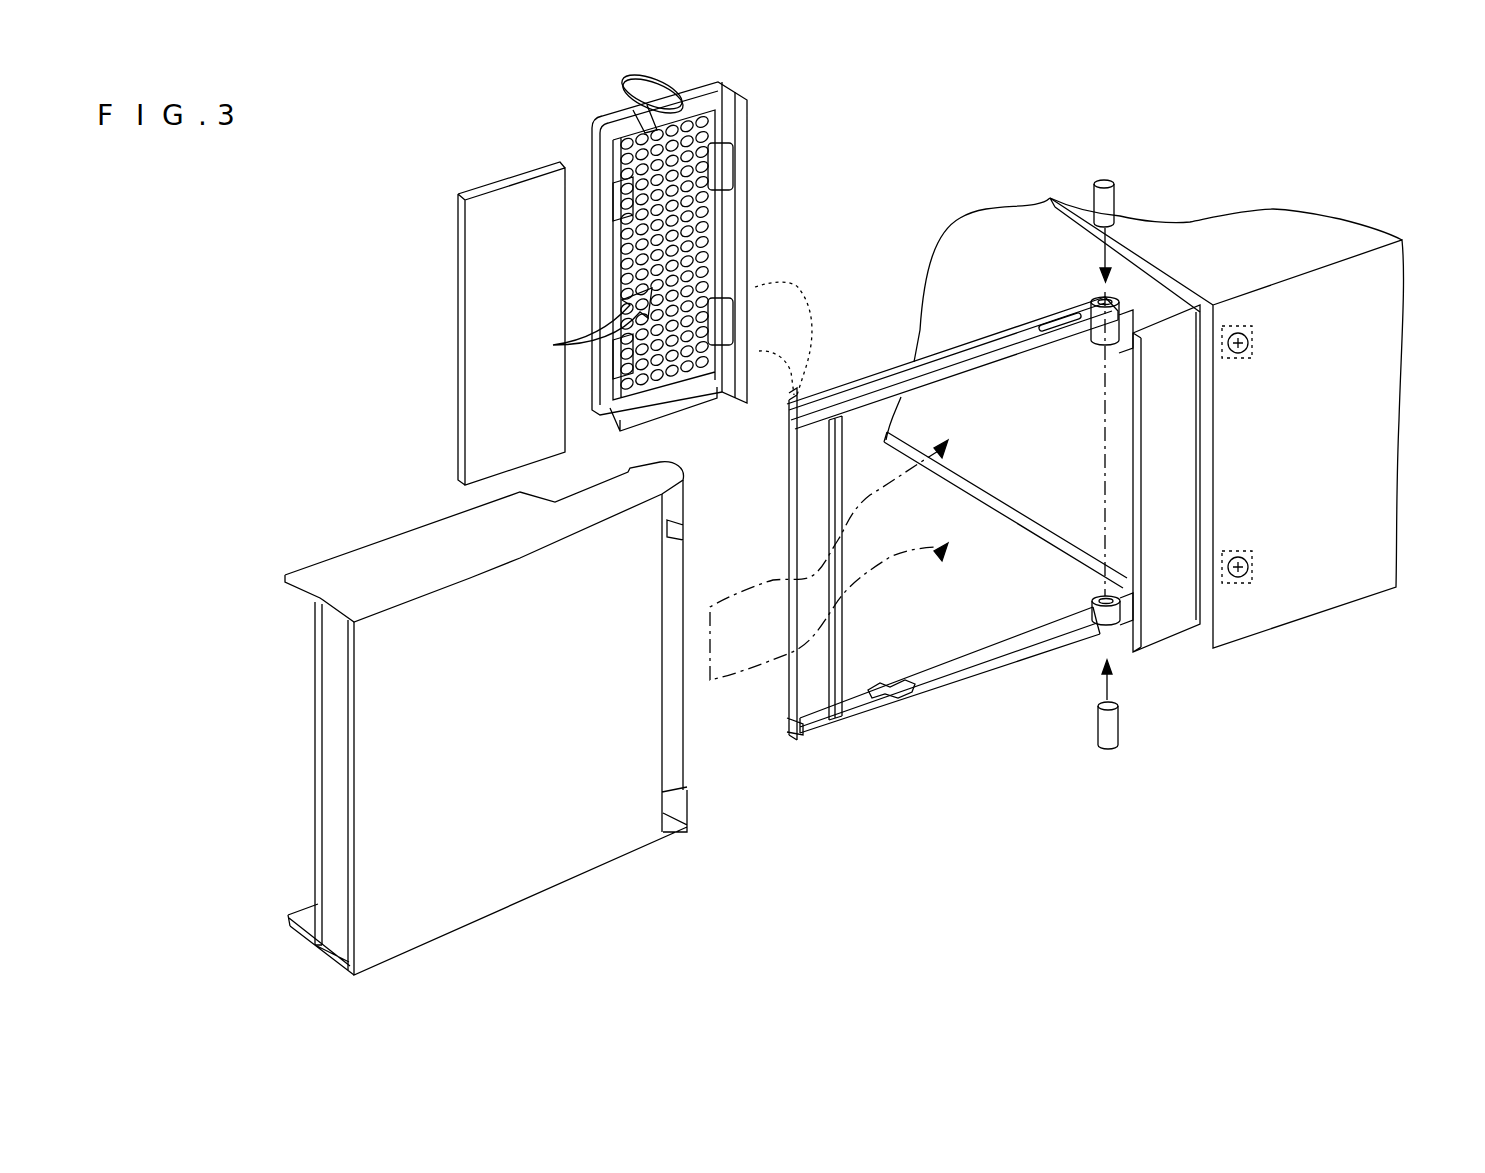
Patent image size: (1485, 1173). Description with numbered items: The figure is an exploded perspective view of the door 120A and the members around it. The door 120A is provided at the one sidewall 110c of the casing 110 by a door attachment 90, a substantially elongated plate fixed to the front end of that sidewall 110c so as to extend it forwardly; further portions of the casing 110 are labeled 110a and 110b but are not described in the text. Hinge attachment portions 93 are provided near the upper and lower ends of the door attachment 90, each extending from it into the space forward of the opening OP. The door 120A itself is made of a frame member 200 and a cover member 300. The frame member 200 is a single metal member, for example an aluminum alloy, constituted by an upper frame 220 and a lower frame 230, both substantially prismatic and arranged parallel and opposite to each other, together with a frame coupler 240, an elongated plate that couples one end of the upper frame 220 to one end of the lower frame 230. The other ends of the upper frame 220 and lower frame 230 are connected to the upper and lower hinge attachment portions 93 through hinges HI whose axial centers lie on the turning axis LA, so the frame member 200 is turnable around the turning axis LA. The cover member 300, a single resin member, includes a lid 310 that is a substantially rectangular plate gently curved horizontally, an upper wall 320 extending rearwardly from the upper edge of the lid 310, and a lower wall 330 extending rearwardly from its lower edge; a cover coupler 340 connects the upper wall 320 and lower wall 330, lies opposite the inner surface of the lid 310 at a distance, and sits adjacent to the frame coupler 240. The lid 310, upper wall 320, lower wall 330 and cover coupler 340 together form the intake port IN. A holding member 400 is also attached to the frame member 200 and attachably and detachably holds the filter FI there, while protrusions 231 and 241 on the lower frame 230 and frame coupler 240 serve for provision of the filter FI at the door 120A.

The holding member 400 is at (745, 183).
The filter FI is at (458, 358).
The hinge HI is at (1118, 217).
The casing 110 is at (1175, 407).
The housing top surface 110a is at (1302, 228).
The housing side wall 110b is at (1014, 512).
The one sidewall 110c is at (1358, 587).
The hinge attachment portion 93 is at (1135, 311).
The door attachment 90 is at (1181, 440).
The opening OP is at (1047, 421).
The upper frame 220 is at (1048, 312).
The lower frame 230 is at (1017, 667).
The protrusion 231 is at (895, 688).
The frame coupler 240 is at (805, 690).
The protrusion 241 is at (846, 650).
The turning axis LA is at (1109, 655).
The frame member 200 is at (997, 530).
The cover member 300 is at (524, 720).
The lid 310 is at (488, 798).
The upper wall 320 is at (362, 559).
The lower wall 330 is at (308, 931).
The cover coupler 340 is at (315, 708).
The intake port IN is at (330, 760).
The door 120A is at (733, 565).